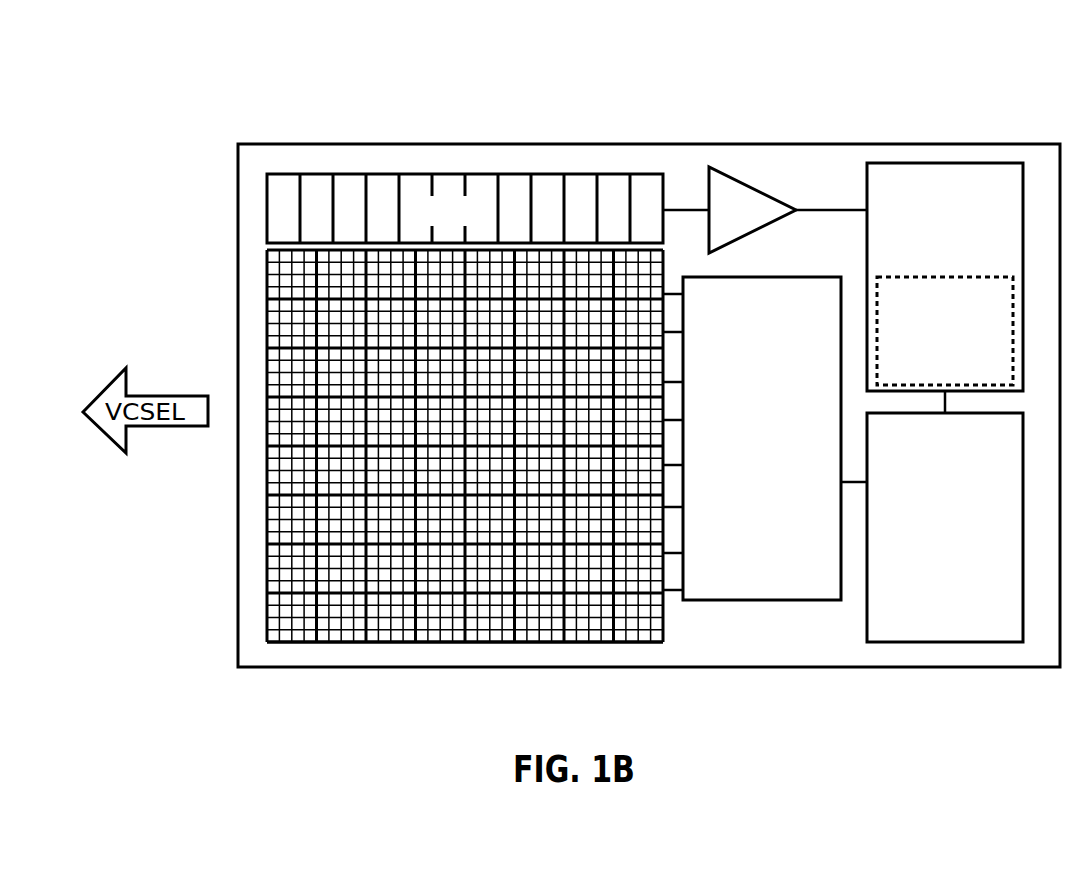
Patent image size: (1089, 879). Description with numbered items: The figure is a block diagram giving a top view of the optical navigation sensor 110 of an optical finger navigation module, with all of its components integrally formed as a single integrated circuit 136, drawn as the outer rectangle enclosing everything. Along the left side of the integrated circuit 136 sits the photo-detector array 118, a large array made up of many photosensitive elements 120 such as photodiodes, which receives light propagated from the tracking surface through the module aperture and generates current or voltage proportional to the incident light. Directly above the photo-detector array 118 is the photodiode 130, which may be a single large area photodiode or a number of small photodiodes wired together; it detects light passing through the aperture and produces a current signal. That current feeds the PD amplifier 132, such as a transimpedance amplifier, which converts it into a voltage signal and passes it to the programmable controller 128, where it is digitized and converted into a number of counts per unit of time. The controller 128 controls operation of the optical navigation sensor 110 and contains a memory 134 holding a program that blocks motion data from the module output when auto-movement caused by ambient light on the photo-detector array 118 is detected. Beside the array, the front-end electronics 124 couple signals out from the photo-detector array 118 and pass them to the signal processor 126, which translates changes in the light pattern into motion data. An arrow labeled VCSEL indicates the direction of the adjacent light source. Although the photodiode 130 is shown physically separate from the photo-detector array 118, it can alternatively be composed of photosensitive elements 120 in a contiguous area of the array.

The optical navigation sensor 110 is at (404, 122).
The photo-detector array 118 is at (465, 432).
The photosensitive elements 120 is at (663, 638).
The front-end electronics 124 is at (785, 458).
The signal processor 126 is at (963, 536).
The programmable controller 128 is at (965, 245).
The photodiode 130 is at (488, 226).
The PD amplifier 132 is at (760, 220).
The memory 134 is at (965, 345).
The integrated circuit 136 is at (647, 144).